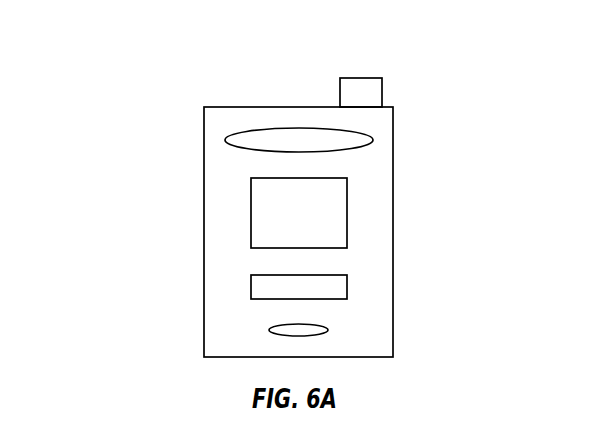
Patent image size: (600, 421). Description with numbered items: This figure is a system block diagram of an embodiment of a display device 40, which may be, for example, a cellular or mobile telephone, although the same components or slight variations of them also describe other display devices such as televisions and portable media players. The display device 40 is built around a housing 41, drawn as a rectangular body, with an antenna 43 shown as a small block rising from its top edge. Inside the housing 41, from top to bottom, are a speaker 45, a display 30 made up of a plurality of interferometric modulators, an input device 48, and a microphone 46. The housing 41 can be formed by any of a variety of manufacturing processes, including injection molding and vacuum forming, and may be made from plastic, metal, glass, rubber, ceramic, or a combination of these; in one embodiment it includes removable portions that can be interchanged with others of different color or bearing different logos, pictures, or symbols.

The display device 40 is at (163, 44).
The housing 41 is at (228, 106).
The antenna 43 is at (365, 78).
The speaker 45 is at (357, 141).
The display 30 is at (347, 205).
The input device 48 is at (347, 285).
The microphone 46 is at (328, 330).